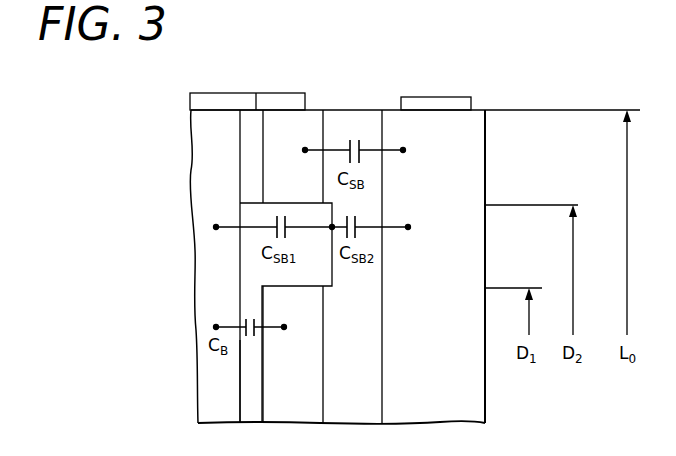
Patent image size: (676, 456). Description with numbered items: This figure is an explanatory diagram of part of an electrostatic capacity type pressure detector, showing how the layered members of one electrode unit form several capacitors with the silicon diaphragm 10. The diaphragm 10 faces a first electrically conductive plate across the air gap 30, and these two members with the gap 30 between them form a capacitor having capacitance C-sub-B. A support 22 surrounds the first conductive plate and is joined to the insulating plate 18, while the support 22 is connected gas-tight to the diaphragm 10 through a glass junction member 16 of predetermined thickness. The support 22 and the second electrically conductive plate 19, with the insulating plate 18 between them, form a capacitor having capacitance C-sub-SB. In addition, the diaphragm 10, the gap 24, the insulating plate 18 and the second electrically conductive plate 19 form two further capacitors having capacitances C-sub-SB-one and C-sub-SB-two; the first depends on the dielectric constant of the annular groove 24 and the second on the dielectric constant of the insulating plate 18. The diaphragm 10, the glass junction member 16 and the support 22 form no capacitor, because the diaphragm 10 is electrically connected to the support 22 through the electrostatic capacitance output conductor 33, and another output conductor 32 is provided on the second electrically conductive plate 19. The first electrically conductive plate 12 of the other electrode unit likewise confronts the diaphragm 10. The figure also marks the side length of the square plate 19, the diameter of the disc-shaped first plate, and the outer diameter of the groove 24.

The diaphragm 10 is at (198, 160).
The first electrically conductive plate 12 is at (288, 424).
The glass junction member 16 is at (252, 118).
The insulating plate 18 is at (367, 118).
The second electrically conductive plate 19 is at (472, 398).
The support 22 is at (313, 118).
The annular groove 24 is at (268, 266).
The air gap 30 is at (246, 400).
The electrostatic capacitance output conductor 32 is at (435, 97).
The electrostatic capacitance output conductor 33 is at (213, 94).